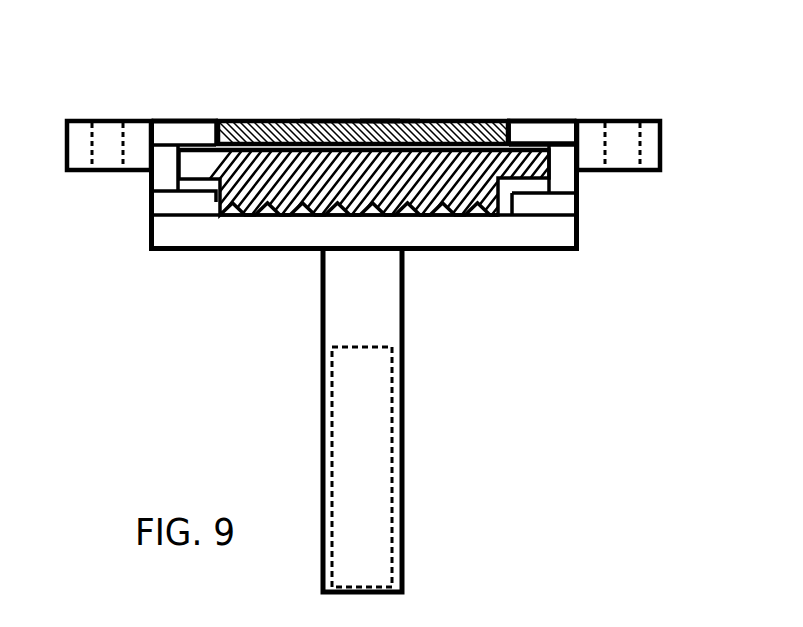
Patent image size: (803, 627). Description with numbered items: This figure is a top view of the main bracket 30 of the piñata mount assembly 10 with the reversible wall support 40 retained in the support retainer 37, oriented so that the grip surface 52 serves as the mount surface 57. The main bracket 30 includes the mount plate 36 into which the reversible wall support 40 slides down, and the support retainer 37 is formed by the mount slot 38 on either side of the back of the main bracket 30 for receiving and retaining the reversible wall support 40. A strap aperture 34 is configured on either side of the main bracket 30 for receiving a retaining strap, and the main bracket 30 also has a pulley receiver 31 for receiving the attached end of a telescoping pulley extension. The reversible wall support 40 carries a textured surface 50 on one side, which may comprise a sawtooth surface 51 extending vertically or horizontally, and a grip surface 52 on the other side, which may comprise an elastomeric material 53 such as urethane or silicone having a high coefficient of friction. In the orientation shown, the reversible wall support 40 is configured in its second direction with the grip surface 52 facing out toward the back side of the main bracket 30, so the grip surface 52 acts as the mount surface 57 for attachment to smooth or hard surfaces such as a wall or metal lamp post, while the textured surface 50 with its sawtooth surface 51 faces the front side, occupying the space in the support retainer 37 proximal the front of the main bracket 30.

The piñata mount assembly 10 is at (110, 92).
The main bracket 30 is at (390, 322).
The pulley receiver 31 is at (392, 443).
The strap aperture 34 is at (620, 142).
The mount plate 36 is at (492, 252).
The support retainer 37 is at (522, 145).
The mount slot 38 is at (197, 140).
The reversible wall support 40 is at (315, 118).
The textured surface 50 is at (278, 220).
The sawtooth surface 51 is at (448, 220).
The grip surface 52 is at (442, 118).
The elastomeric material 53 is at (383, 118).
The mount surface 57 is at (343, 118).